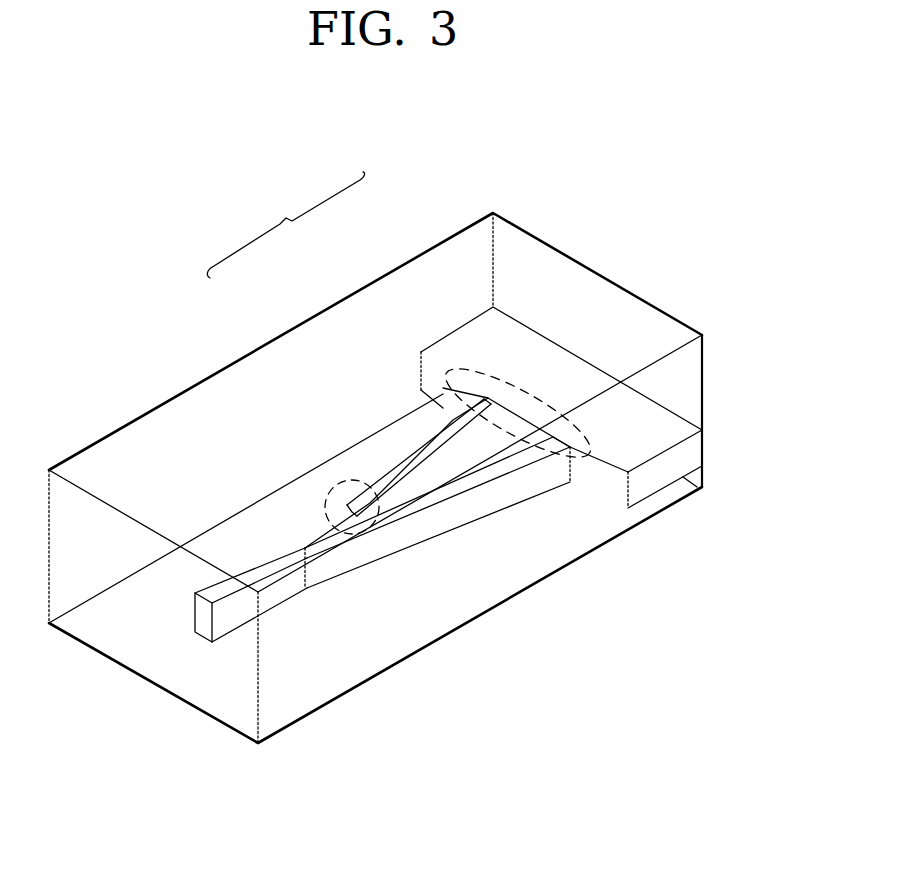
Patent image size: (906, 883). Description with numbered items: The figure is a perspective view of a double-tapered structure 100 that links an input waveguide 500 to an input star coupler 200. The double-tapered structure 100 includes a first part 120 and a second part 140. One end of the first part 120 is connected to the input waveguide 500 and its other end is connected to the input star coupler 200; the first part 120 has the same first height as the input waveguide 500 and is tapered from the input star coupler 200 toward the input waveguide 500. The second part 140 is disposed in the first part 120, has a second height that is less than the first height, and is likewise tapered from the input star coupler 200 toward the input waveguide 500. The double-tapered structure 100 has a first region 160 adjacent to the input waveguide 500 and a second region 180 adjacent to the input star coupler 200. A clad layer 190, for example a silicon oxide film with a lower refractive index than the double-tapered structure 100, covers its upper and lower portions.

The double-tapered structure 100 is at (285, 225).
The first part 120 is at (437, 422).
The second part 140 is at (415, 417).
The first region 160 is at (343, 482).
The second region 180 is at (470, 372).
The clad layer 190 is at (692, 378).
The input star coupler 200 is at (692, 453).
The input waveguide 500 is at (259, 567).